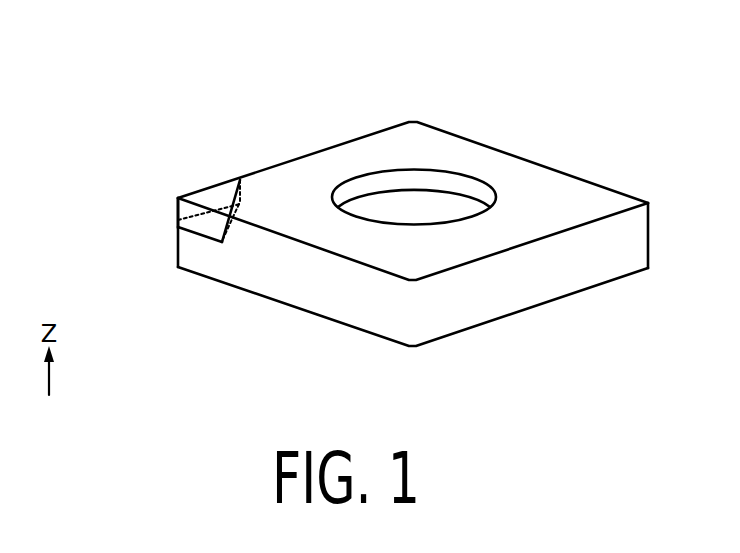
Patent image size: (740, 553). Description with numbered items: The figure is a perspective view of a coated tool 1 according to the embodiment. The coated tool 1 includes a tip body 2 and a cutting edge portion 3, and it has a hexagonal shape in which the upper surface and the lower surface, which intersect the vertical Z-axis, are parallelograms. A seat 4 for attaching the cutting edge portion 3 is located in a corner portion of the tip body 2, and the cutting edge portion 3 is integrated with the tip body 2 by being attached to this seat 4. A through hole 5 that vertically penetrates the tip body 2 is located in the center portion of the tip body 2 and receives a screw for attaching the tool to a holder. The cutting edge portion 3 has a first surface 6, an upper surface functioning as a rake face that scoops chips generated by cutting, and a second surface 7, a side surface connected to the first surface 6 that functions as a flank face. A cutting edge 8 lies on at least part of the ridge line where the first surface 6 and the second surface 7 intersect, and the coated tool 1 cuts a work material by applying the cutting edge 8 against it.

The coated tool 1 is at (176, 57).
The tip body 2 is at (350, 163).
The cutting edge portion 3 is at (168, 174).
The seat 4 is at (214, 223).
The through hole 5 is at (462, 185).
The first surface 6 is at (213, 198).
The second surface 7 is at (205, 208).
The cutting edge 8 is at (183, 246).